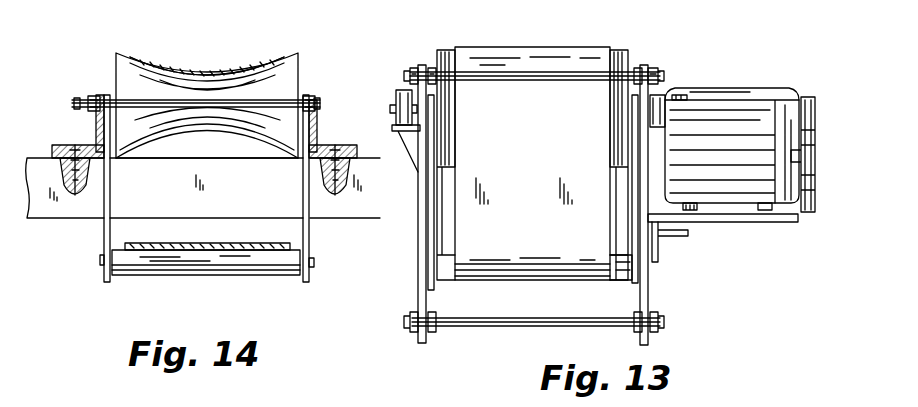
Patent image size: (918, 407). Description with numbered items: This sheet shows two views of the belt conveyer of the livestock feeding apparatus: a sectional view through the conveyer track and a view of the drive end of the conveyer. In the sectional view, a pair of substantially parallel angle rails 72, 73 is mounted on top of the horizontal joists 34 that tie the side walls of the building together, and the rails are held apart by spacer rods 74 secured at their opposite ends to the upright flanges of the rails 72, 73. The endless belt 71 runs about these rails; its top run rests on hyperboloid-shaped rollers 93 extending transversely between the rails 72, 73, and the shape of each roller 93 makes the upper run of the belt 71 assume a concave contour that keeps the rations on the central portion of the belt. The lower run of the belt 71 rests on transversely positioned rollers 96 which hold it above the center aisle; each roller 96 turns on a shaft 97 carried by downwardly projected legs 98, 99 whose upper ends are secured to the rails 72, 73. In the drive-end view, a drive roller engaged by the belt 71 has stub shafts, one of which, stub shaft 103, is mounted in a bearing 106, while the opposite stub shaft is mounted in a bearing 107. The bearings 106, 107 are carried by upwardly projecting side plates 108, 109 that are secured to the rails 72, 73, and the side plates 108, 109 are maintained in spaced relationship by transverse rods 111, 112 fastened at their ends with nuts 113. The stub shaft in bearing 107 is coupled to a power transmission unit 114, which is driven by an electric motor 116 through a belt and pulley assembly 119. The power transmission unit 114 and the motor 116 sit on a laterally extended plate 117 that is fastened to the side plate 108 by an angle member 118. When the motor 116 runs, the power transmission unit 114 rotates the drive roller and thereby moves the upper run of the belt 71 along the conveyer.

In FIG. 14, the horizontal joists 34 is at (44, 220).
In FIG. 14, the endless belt 71 is at (216, 69).
In FIG. 13, the endless belt 71 is at (518, 48).
In FIG. 14, the angle rail 72 is at (63, 144).
In FIG. 14, the angle rail 73 is at (317, 131).
In FIG. 14, the spacer rods 74 is at (298, 80).
In FIG. 14, the hyperboloid-shaped rollers 93 is at (120, 64).
In FIG. 14, the rollers 96 is at (230, 275).
In FIG. 13, the rollers 96 is at (616, 280).
In FIG. 14, the shaft 97 is at (314, 265).
In FIG. 13, the shaft 97 is at (430, 278).
In FIG. 14, the leg 98 is at (104, 233).
In FIG. 13, the leg 98 is at (436, 187).
In FIG. 14, the leg 99 is at (312, 235).
In FIG. 13, the leg 99 is at (610, 177).
In FIG. 13, the stub shaft 103 is at (396, 108).
In FIG. 13, the bearing 106 is at (400, 89).
In FIG. 13, the bearing 107 is at (665, 94).
In FIG. 13, the side plate 108 is at (648, 302).
In FIG. 13, the side plate 109 is at (418, 232).
In FIG. 13, the transverse rod 111 is at (518, 78).
In FIG. 13, the transverse rod 112 is at (482, 318).
In FIG. 13, the nuts 113 is at (422, 68).
In FIG. 13, the power transmission unit 114 is at (752, 88).
In FIG. 13, the electric motor 116 is at (736, 194).
In FIG. 13, the laterally extended plate 117 is at (788, 224).
In FIG. 13, the angle member 118 is at (654, 250).
In FIG. 13, the belt and pulley assembly 119 is at (812, 96).